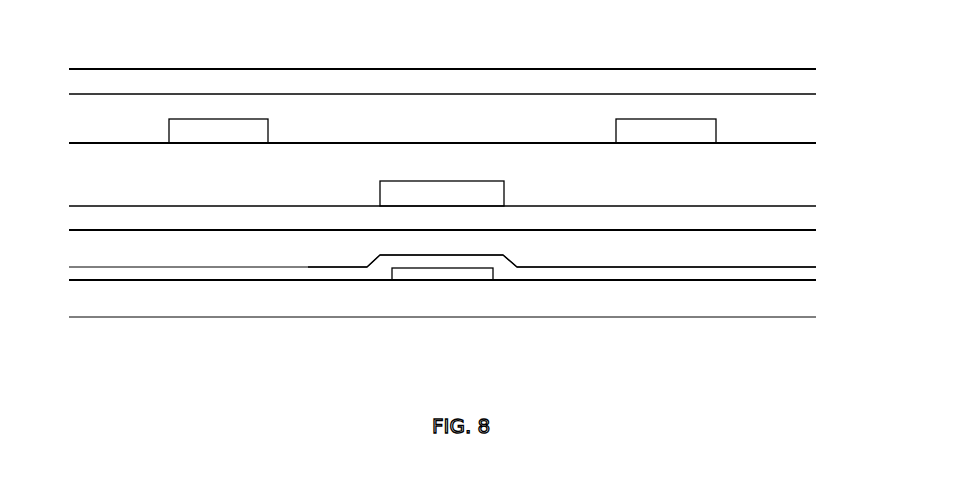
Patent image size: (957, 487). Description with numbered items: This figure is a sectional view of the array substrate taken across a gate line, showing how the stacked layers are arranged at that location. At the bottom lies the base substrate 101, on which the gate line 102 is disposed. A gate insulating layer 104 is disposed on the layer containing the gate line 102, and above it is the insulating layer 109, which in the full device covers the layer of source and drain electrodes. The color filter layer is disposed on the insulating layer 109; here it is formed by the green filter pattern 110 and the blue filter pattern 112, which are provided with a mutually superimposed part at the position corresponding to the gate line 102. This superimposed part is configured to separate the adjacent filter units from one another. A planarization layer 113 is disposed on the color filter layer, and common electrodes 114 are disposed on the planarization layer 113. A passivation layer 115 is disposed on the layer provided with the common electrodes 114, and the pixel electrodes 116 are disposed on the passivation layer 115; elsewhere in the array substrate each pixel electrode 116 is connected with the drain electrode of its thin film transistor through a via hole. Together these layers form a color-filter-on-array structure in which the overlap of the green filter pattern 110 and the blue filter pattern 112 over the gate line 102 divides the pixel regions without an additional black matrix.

The base substrate 101 is at (118, 293).
The gate line 102 is at (411, 273).
The gate insulating layer 104 is at (530, 272).
The insulating layer 109 is at (703, 255).
The green filter pattern 110 is at (82, 218).
The blue filter pattern 112 is at (405, 192).
The planarization layer 113 is at (305, 167).
The common electrode 114 is at (555, 80).
The passivation layer 115 is at (733, 105).
The pixel electrode 116 is at (193, 130).